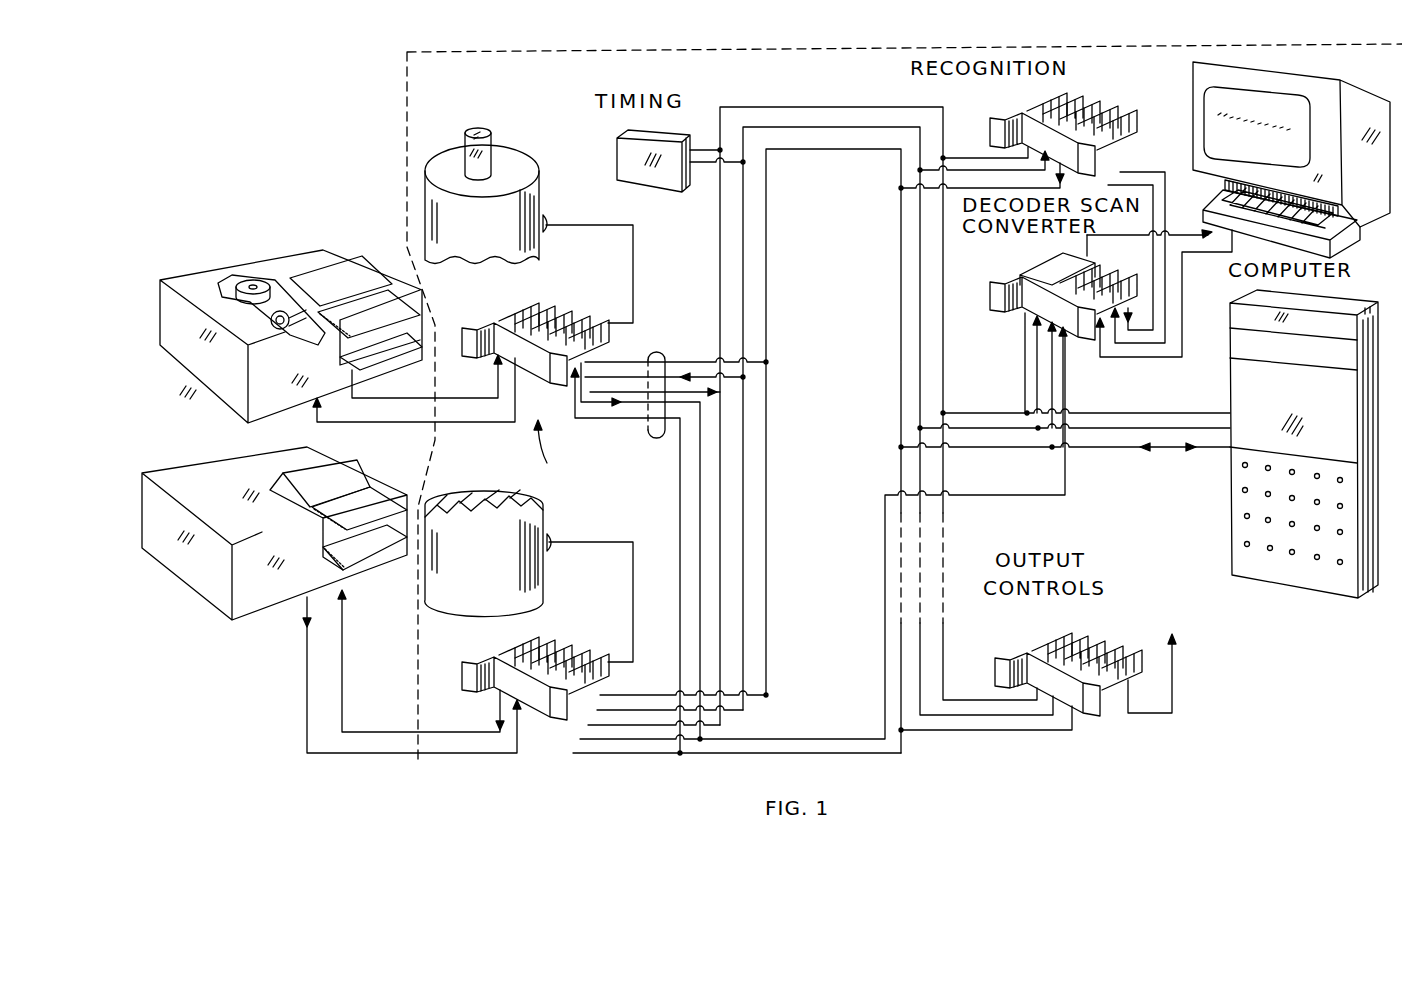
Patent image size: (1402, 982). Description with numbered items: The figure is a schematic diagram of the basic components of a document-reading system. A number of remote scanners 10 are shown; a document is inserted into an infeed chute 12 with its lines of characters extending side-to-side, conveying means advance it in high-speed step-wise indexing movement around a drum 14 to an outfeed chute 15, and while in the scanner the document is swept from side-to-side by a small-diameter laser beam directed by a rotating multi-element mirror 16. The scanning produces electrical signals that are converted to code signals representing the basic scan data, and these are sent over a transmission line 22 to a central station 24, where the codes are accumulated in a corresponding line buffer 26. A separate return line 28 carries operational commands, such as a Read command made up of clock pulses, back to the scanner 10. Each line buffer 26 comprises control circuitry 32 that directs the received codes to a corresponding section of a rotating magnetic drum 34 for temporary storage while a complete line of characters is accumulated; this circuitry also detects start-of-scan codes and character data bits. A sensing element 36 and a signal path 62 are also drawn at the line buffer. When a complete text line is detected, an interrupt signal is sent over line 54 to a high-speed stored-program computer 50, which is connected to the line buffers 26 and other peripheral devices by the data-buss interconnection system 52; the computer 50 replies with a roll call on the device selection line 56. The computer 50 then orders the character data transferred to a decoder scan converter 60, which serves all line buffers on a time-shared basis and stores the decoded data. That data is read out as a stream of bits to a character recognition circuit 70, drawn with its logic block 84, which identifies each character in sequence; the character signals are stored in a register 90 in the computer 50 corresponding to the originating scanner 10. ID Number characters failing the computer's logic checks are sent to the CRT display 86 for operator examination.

The remote scanner 10 is at (282, 413).
The infeed chute 12 is at (388, 283).
The drum 14 is at (305, 323).
The outfeed chute 15 is at (390, 320).
The rotating multi-element mirror 16 is at (262, 280).
The transmission line 22 is at (377, 398).
The central station 24 is at (402, 116).
The line buffer 26 is at (606, 257).
The return line 28 is at (347, 422).
The control circuitry 32 is at (533, 355).
The rotating magnetic drum 34 is at (453, 155).
The sensor 36 is at (550, 217).
The stored-program computer 50 is at (1296, 436).
The data-buss interconnection system 52 is at (657, 356).
The interrupt line 54 is at (695, 390).
The device selection line 56 is at (672, 377).
The decoder scan converter 60 is at (1006, 320).
The signal line 62 is at (567, 441).
The character recognition circuit 70 is at (1084, 114).
The recognition logic block 84 is at (1075, 100).
The CRT display 86 is at (1333, 68).
The register 90 is at (1230, 350).